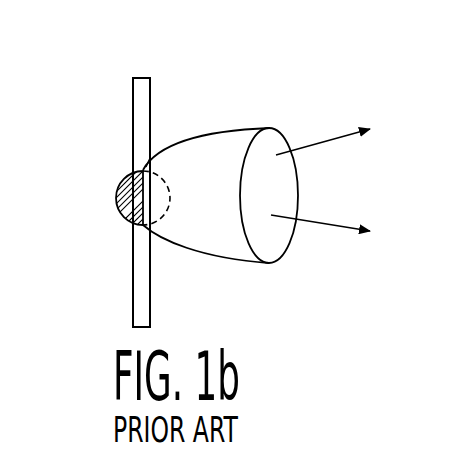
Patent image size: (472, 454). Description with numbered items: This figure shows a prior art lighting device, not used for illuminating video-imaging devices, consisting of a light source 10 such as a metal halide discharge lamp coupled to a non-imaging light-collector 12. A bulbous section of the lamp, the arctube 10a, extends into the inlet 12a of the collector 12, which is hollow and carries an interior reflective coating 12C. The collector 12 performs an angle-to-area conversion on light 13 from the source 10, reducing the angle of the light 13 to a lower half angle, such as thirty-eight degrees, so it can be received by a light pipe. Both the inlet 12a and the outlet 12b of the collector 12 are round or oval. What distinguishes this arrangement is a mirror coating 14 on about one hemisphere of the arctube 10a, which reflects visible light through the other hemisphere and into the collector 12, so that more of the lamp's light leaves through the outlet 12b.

The light source 10 is at (125, 66).
The arctube 10a is at (114, 166).
The non-imaging light-collector 12 is at (213, 145).
The inlet 12a is at (146, 167).
The outlet 12b is at (274, 128).
The interior reflective coating 12C is at (276, 232).
The light 13 is at (348, 223).
The mirror coating 14 is at (118, 197).